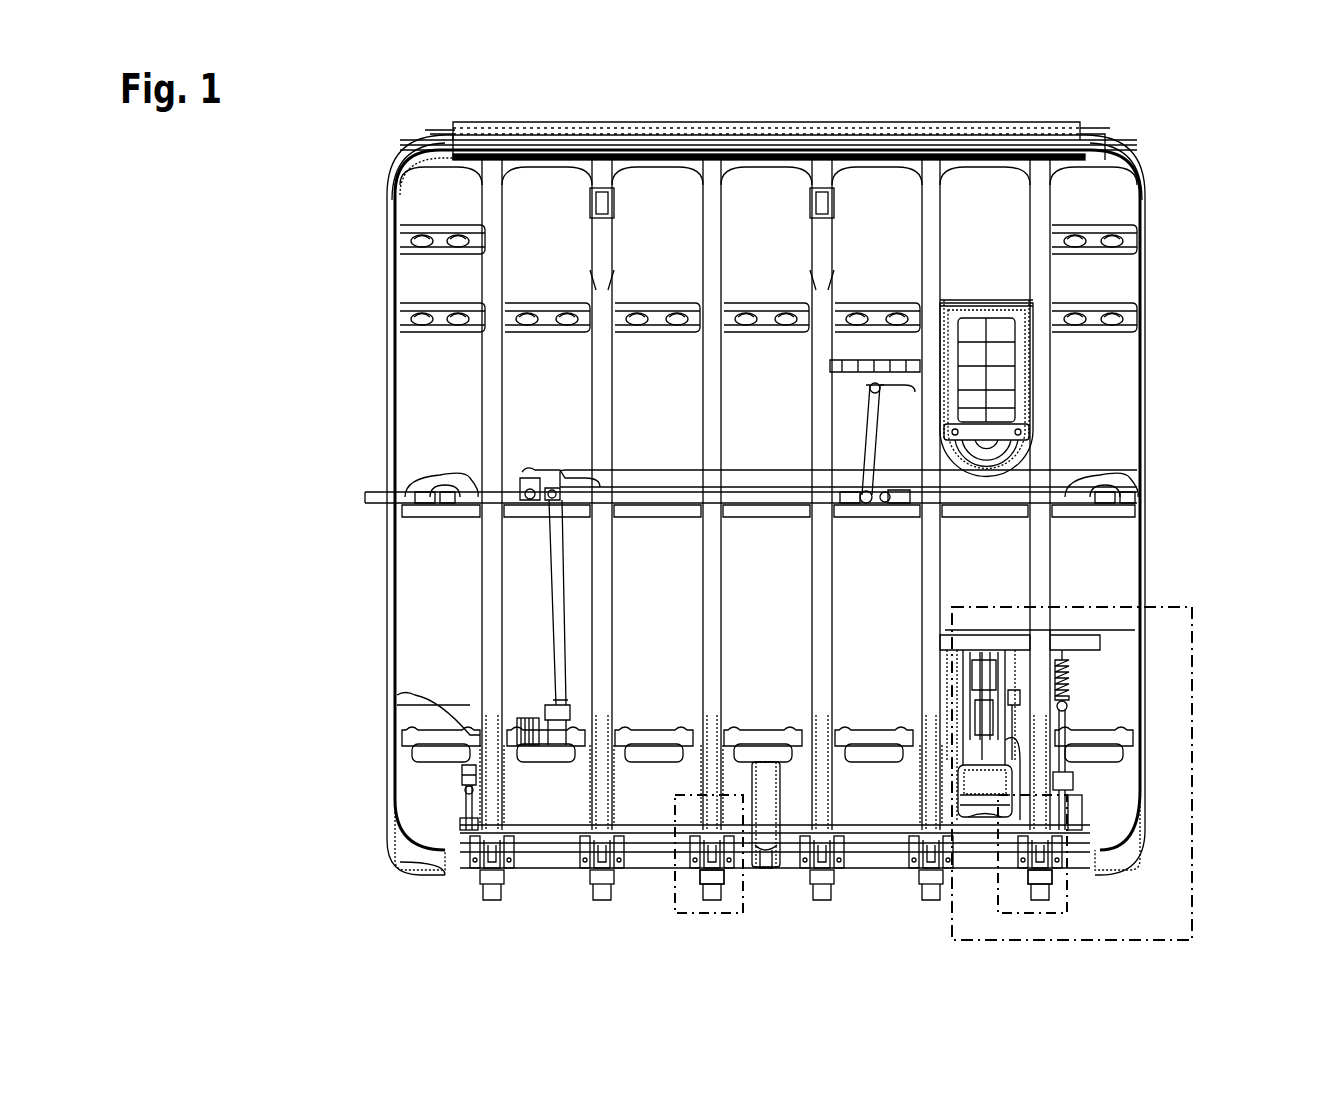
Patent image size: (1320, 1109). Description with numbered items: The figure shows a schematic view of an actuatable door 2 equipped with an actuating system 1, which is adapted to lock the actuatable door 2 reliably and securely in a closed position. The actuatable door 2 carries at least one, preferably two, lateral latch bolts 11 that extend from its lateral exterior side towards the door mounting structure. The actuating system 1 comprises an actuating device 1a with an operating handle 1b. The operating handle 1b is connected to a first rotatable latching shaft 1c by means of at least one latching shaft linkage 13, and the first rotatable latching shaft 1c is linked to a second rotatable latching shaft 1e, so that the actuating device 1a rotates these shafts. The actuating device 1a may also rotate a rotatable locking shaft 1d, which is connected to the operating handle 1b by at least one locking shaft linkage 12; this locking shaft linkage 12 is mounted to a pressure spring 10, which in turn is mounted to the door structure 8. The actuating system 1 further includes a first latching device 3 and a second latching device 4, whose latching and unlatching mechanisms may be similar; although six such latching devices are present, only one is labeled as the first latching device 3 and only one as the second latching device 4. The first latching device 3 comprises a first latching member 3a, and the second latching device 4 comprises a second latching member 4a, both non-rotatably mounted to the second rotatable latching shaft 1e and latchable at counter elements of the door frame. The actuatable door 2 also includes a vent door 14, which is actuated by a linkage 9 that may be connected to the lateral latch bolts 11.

The actuating system 1 is at (1178, 590).
The actuating device 1a is at (1197, 738).
The operating handle 1b is at (928, 898).
The first rotatable latching shaft 1c is at (527, 830).
The rotatable locking shaft 1d is at (567, 845).
The second rotatable latching shaft 1e is at (645, 858).
The actuatable door 2 is at (1175, 155).
The first latching device 3 is at (1070, 905).
The first latching member 3a is at (1037, 887).
The second latching device 4 is at (748, 905).
The second latching member 4a is at (714, 883).
The door structure 8 is at (1100, 641).
The linkage 9 is at (465, 790).
The pressure spring 10 is at (1075, 680).
The lateral latch bolts 11 is at (1130, 493).
The locking shaft linkage 12 is at (1070, 758).
The latching shaft linkage 13 is at (1000, 812).
The vent door 14 is at (1012, 400).